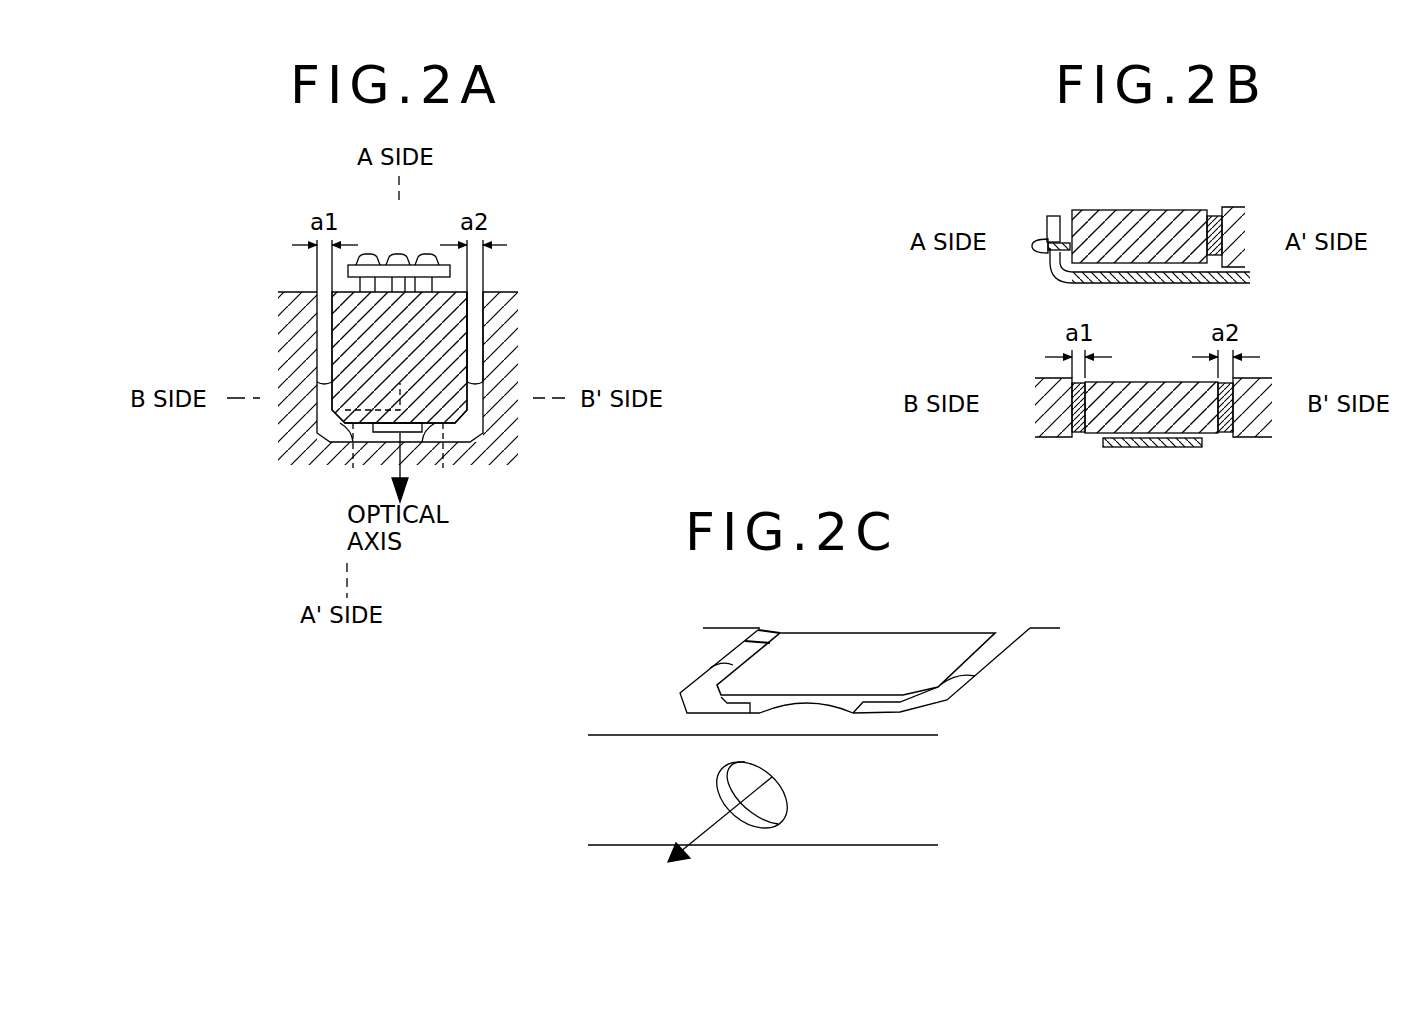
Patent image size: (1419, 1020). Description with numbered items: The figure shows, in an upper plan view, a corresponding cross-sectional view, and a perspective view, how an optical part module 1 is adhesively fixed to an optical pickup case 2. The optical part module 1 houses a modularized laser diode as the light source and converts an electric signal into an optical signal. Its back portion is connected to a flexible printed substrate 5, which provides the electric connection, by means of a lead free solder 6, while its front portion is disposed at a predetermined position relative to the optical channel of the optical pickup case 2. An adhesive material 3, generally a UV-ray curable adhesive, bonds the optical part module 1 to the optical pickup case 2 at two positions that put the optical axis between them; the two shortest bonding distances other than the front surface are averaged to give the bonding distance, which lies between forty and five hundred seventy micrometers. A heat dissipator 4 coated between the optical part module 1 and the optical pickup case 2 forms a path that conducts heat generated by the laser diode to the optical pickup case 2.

In FIG. 2A, the optical part module 1 is at (355, 345).
In FIG. 2B, the optical part module 1 is at (1157, 228).
In FIG. 2C, the optical part module 1 is at (843, 663).
In FIG. 2A, the optical pickup case 2 is at (297, 448).
In FIG. 2B, the optical pickup case 2 is at (1237, 222).
In FIG. 2C, the optical pickup case 2 is at (915, 793).
In FIG. 2A, the adhesive material 3 is at (330, 424).
In FIG. 2B, the adhesive material 3 is at (1215, 217).
In FIG. 2C, the adhesive material 3 is at (705, 690).
In FIG. 2A, the heat dissipator 4 is at (480, 345).
In FIG. 2C, the heat dissipator 4 is at (740, 655).
In FIG. 2A, the flexible printed substrate 5 is at (412, 270).
In FIG. 2B, the flexible printed substrate 5 is at (1055, 214).
In FIG. 2A, the lead free solder 6 is at (395, 260).
In FIG. 2B, the lead free solder 6 is at (1040, 243).